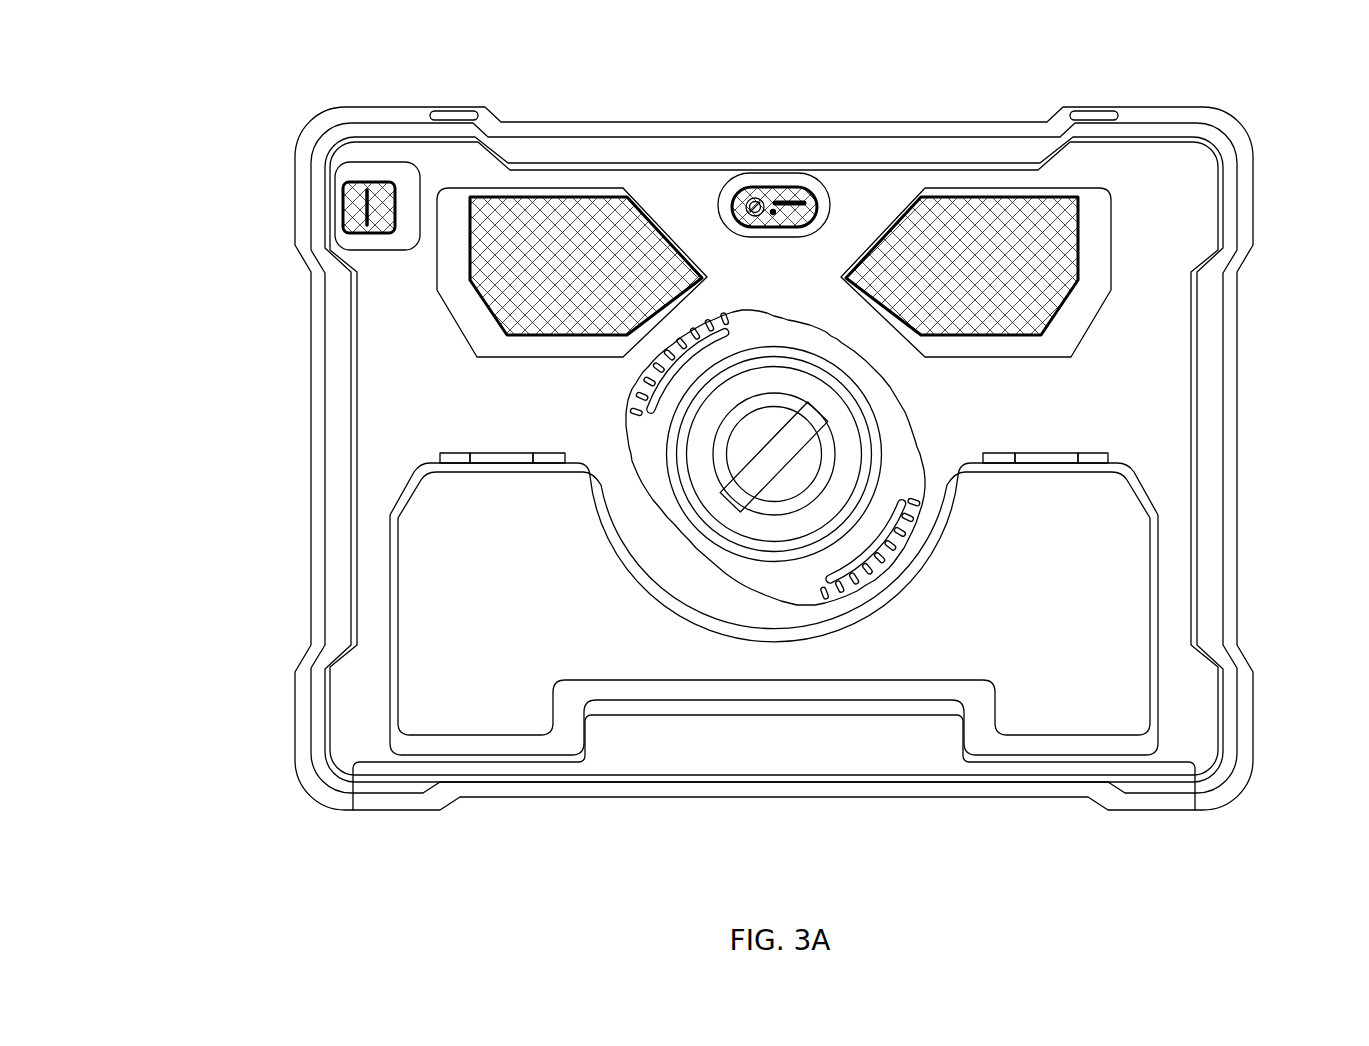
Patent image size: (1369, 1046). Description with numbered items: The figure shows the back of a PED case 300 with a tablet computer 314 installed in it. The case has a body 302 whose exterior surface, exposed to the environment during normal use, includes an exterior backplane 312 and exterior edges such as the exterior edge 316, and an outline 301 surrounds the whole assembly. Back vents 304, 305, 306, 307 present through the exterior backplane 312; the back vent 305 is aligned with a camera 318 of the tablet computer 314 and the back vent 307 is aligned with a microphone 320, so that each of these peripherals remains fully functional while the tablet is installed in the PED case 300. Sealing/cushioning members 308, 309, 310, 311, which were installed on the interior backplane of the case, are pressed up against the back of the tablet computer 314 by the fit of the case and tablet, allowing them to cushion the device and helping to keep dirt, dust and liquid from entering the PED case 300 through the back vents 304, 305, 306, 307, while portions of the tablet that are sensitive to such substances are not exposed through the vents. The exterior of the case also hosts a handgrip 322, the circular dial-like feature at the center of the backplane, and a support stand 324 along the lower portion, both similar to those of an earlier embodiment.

The PED case 300 is at (150, 78).
The outer housing 301 is at (340, 108).
The body 302 is at (633, 128).
The back vent 304 is at (572, 272).
The back vent 305 is at (787, 187).
The back vent 306 is at (976, 272).
The back vent 307 is at (353, 183).
The sealing/cushioning member 308 is at (650, 212).
The sealing/cushioning member 309 is at (756, 226).
The sealing/cushioning member 310 is at (947, 336).
The sealing/cushioning member 311 is at (362, 233).
The exterior backplane 312 is at (774, 564).
The tablet computer 314 is at (1008, 223).
The exterior edge 316 is at (305, 484).
The camera 318 is at (757, 192).
The microphone 320 is at (362, 218).
The handgrip 322 is at (903, 473).
The support stand 324 is at (1060, 675).